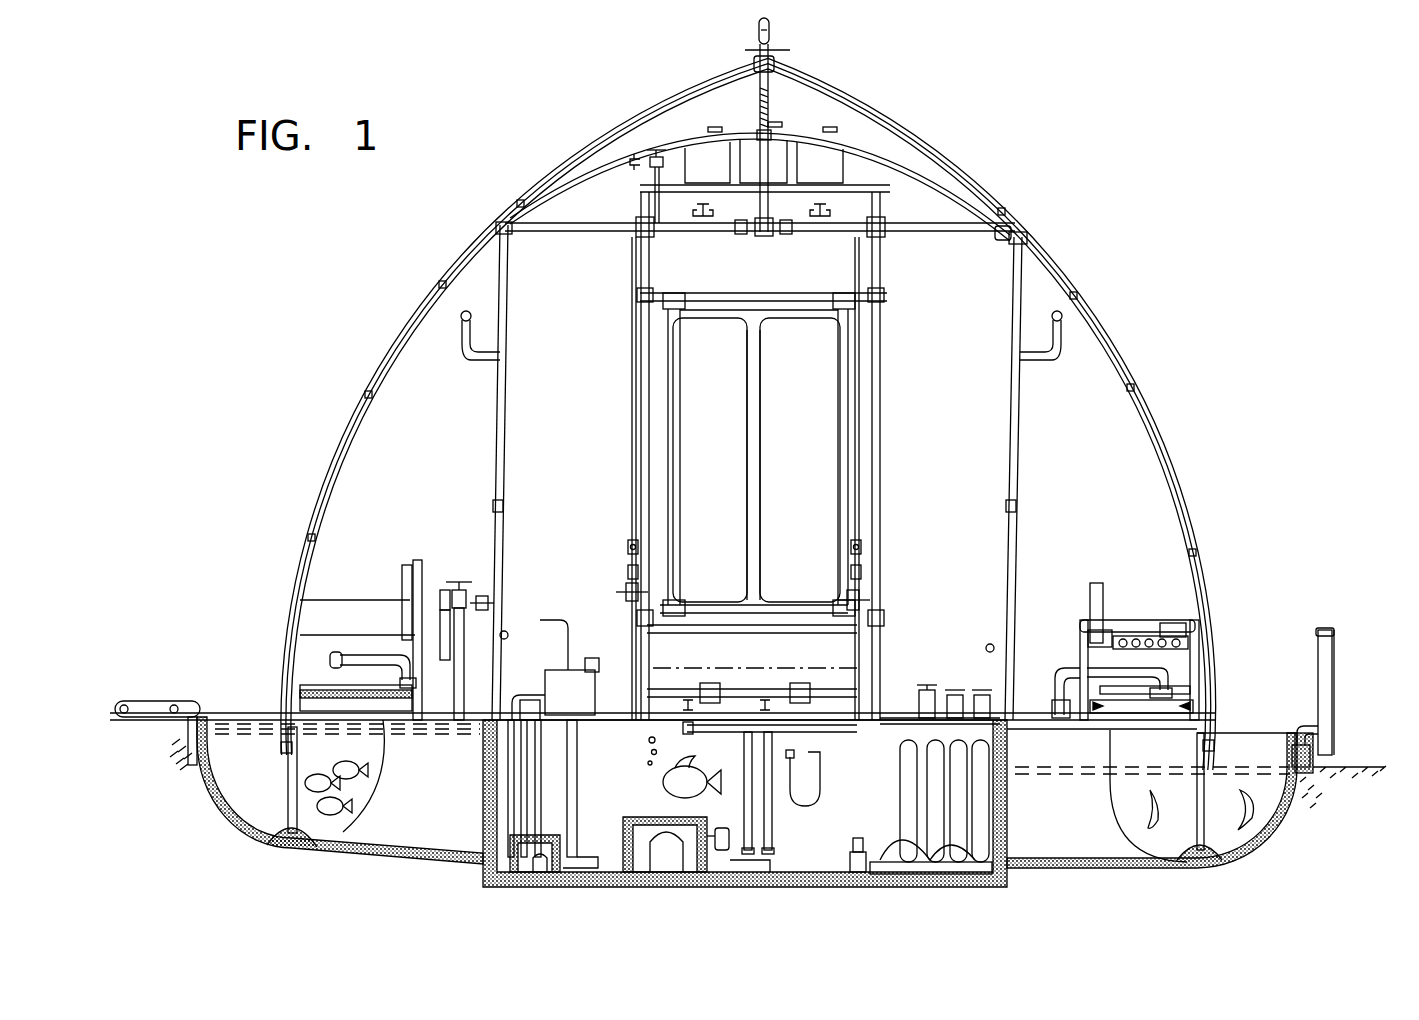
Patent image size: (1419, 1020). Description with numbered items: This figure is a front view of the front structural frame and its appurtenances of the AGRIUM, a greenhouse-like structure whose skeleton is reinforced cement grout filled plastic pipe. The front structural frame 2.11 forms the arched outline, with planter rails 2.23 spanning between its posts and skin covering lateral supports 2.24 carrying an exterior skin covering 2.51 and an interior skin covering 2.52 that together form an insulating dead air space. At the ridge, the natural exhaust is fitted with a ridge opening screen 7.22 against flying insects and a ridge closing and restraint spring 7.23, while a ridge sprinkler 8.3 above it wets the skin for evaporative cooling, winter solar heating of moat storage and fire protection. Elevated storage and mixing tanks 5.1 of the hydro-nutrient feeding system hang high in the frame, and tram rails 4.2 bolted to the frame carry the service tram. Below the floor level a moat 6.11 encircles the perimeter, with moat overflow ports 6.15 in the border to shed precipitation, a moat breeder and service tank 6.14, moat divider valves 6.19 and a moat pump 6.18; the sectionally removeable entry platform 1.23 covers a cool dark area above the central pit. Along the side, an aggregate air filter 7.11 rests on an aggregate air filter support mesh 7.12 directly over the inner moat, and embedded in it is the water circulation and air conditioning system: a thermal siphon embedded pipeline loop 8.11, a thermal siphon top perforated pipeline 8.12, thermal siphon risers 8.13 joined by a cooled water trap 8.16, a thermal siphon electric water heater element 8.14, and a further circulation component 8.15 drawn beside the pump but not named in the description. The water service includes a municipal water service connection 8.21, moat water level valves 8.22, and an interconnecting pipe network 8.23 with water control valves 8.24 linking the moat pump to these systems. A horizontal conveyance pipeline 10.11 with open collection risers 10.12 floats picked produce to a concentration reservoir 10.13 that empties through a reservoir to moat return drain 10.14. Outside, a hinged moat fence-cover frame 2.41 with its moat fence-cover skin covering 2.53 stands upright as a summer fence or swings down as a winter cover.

The sectionally removeable entry platform 1.23 is at (720, 652).
The front structural frame 2.11 is at (1097, 338).
The planter rails 2.23 is at (752, 420).
The skin covering lateral supports 2.24 is at (1134, 388).
The hinged moat fence-cover frame 2.41 is at (1318, 665).
The exterior skin covering 2.51 is at (918, 132).
The interior skin covering 2.52 is at (938, 167).
The moat fence-cover skin covering 2.53 is at (1334, 667).
The tram rails 4.2 is at (990, 644).
The elevated storage and mixing tanks 5.1 is at (752, 138).
The moat 6.11 is at (413, 747).
The moat breeder and service tank 6.14 is at (640, 760).
The moat overflow ports 6.15 is at (195, 728).
The moat pump 6.18 is at (650, 822).
The moat divider valves 6.19 is at (730, 838).
The aggregate air filter 7.11 is at (1106, 733).
The aggregate air filter support mesh 7.12 is at (1167, 730).
The ridge opening screen 7.22 is at (752, 62).
The ridge closing and restraint spring 7.23 is at (772, 112).
The ridge sprinkler 8.3 is at (772, 27).
The thermal siphon embedded pipeline loop 8.11 is at (1050, 712).
The thermal siphon top perforated pipeline 8.12 is at (1150, 682).
The thermal siphon riser 8.13 is at (975, 770).
The thermal siphon electric water heater element 8.14 is at (955, 690).
The pump 8.15 is at (595, 660).
The cooled water trap 8.16 is at (910, 825).
The municipal water service connection 8.21 is at (772, 820).
The moat water level valves 8.22 is at (805, 806).
The interconnecting pipe network 8.23 is at (768, 234).
The water control valves 8.24 is at (650, 170).
The horizontal conveyance pipeline 10.11 is at (1090, 638).
The open collection risers 10.12 is at (1097, 580).
The concentration reservoir 10.13 is at (1150, 636).
The reservoir to moat return drain 10.14 is at (1180, 625).